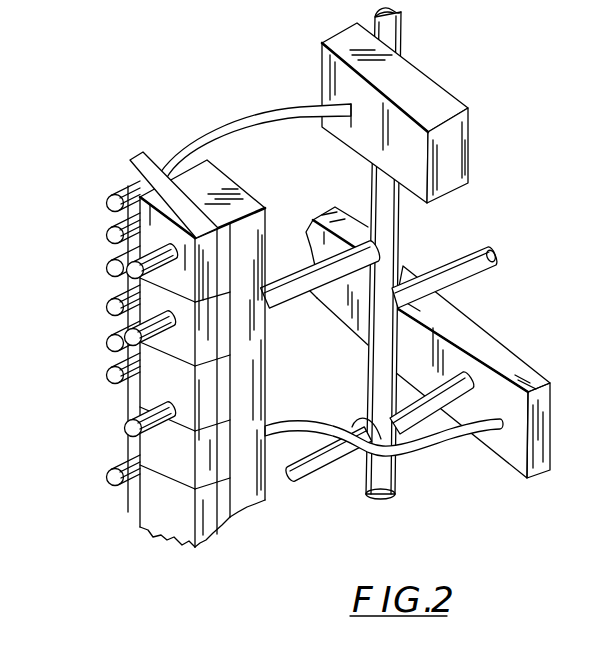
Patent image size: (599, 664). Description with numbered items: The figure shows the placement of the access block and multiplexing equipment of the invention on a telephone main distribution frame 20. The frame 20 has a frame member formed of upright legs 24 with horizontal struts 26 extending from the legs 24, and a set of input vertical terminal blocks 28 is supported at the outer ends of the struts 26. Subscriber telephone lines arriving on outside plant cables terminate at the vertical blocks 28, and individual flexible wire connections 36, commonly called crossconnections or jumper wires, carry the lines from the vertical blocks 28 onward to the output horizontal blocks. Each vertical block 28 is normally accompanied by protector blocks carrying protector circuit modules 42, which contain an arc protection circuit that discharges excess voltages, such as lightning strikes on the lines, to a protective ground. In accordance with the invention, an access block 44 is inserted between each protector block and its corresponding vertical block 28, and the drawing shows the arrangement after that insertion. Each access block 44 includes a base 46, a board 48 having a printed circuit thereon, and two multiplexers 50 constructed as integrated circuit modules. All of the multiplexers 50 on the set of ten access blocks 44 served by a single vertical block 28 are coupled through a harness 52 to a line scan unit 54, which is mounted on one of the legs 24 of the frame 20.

The frame 20 is at (536, 321).
The upright legs 24 is at (397, 477).
The horizontal struts 26 is at (478, 246).
The input vertical terminal blocks 28 is at (253, 504).
The flexible wire connections 36 is at (283, 422).
The protector circuit modules 42 is at (126, 426).
The access block 44 is at (222, 255).
The base 46 is at (181, 220).
The board 48 is at (139, 157).
The multiplexers 50 is at (107, 235).
The harness 52 is at (222, 122).
The line scan unit 54 is at (456, 157).